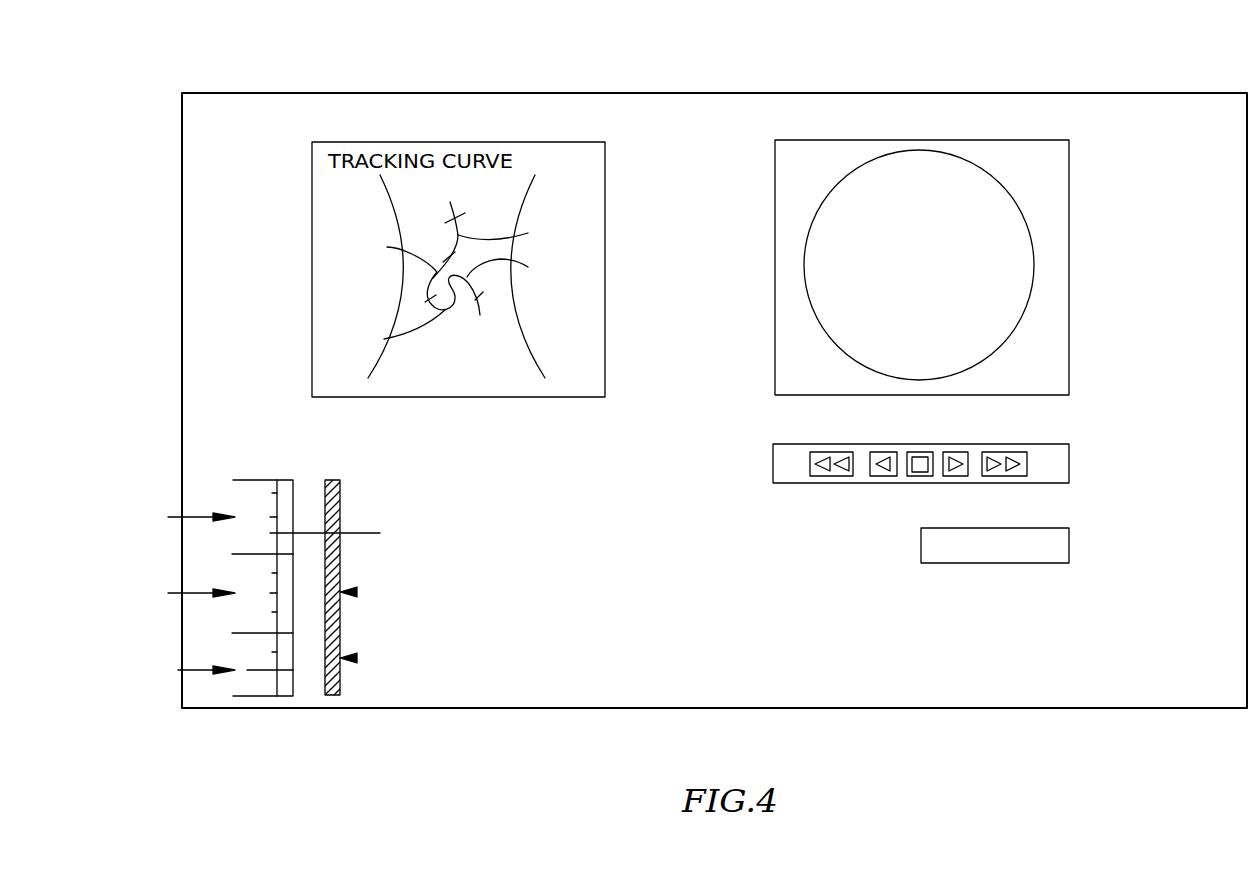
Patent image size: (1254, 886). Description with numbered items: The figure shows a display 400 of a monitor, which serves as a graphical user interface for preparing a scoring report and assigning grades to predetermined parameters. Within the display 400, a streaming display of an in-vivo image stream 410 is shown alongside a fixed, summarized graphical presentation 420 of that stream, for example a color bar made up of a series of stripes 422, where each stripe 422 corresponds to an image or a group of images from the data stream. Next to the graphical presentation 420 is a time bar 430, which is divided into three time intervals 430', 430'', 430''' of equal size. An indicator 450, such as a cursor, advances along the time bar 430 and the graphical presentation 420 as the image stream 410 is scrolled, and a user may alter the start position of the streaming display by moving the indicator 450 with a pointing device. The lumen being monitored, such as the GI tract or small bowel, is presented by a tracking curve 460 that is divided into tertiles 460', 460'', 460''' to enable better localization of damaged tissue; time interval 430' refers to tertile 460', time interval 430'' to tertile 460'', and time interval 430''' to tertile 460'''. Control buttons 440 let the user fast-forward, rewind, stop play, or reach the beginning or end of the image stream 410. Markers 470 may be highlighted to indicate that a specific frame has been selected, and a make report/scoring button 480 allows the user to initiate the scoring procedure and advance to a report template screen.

The display 400 is at (220, 62).
The image stream 410 is at (1040, 138).
The graphical presentation 420 is at (390, 572).
The stripes 422 is at (340, 500).
The time bar 430 is at (255, 573).
The time interval 430' is at (177, 514).
The time interval 430'' is at (177, 590).
The time interval 430''' is at (177, 667).
The control buttons 440 is at (1045, 444).
The indicator 450 is at (362, 535).
The tracking curve 460 is at (504, 240).
The tertile 460' is at (412, 272).
The tertile 460'' is at (389, 329).
The tertile 460''' is at (527, 269).
The markers 470 is at (355, 657).
The make report/scoring button 480 is at (1045, 528).